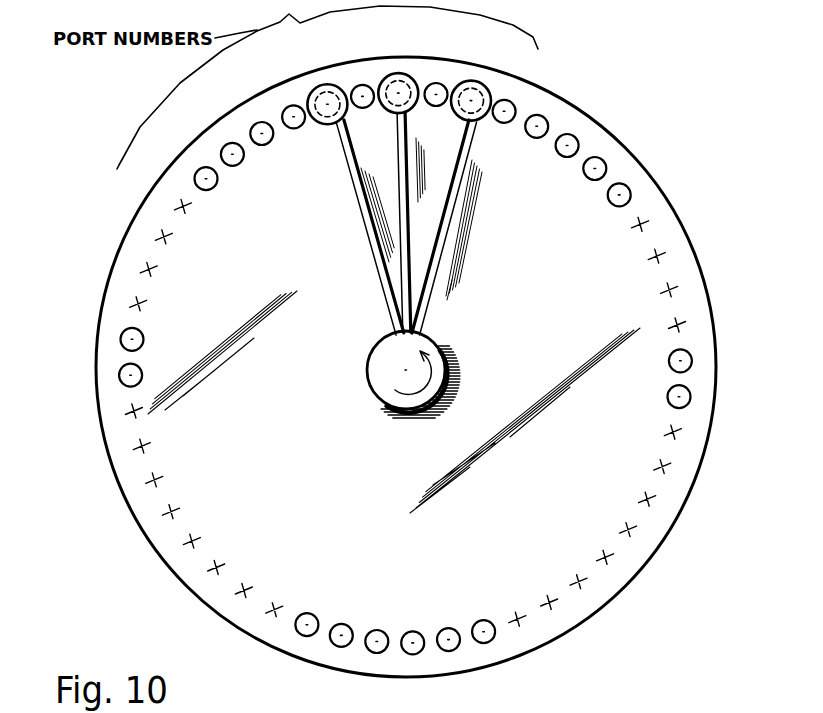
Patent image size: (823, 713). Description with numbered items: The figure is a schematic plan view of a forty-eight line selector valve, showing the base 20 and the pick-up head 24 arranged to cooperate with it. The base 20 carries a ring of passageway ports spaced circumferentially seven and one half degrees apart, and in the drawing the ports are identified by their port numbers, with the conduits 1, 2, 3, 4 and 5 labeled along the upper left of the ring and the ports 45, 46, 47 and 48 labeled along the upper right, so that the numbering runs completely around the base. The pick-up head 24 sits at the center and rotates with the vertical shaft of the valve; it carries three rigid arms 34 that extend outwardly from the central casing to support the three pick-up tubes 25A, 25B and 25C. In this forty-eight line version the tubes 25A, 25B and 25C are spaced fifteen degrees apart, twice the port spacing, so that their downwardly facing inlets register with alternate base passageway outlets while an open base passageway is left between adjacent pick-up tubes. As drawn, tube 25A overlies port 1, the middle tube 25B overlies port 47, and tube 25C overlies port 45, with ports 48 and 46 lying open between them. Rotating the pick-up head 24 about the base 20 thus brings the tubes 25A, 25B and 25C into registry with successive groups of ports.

The base 20 is at (614, 602).
The pick-up head 24 is at (443, 341).
The rigid arms 34 is at (357, 216).
The pick-up tube 25A is at (318, 126).
The pick-up tube 25B is at (386, 108).
The pick-up tube 25C is at (481, 120).
The conduit 1 is at (315, 86).
The conduit 2 is at (284, 108).
The conduit 3 is at (252, 125).
The conduit 4 is at (222, 148).
The conduit 5 is at (200, 176).
The port number 45 is at (482, 91).
The port number 46 is at (442, 85).
The port number 47 is at (403, 80).
The port number 48 is at (362, 84).